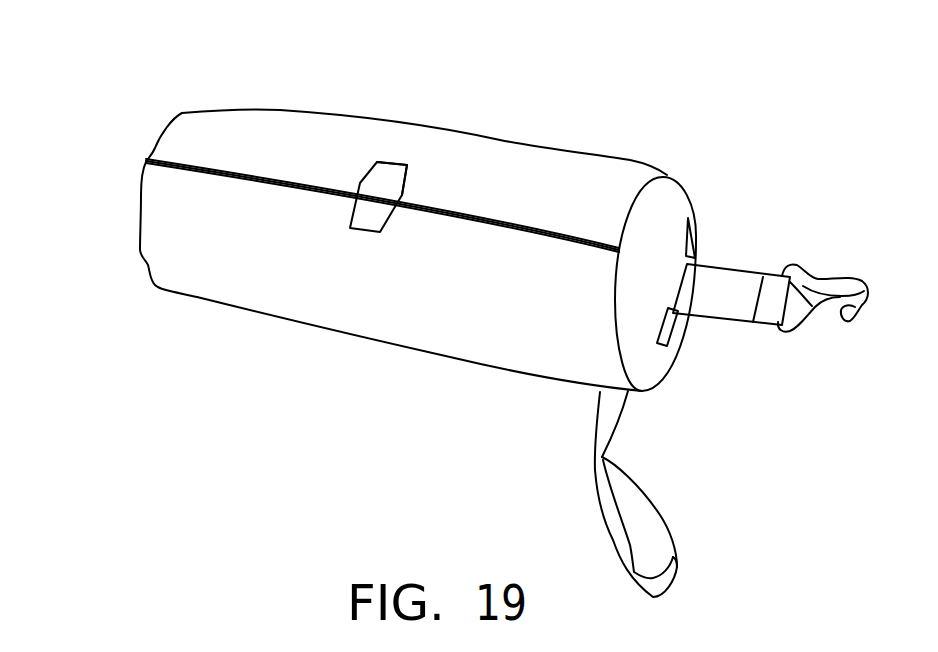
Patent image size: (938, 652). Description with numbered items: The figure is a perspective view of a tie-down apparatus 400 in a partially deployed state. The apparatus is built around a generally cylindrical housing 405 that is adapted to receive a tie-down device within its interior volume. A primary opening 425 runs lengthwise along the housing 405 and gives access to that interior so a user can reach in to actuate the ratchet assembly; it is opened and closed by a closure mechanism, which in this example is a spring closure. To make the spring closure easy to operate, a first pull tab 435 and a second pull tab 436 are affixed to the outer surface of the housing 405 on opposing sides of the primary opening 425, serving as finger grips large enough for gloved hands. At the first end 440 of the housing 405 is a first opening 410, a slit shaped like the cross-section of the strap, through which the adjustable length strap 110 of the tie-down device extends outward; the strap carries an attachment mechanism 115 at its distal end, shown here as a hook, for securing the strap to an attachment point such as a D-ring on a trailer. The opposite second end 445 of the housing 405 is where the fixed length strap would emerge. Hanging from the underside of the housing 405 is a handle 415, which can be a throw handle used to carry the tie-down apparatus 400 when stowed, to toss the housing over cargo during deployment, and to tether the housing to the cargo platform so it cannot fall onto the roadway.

The tie-down apparatus 400 is at (455, 310).
The housing 405 is at (612, 166).
The first opening 410 is at (691, 250).
The handle 415 is at (653, 517).
The primary opening 425 is at (283, 173).
The first pull tab 435 is at (370, 212).
The second pull tab 436 is at (390, 180).
The first end 440 is at (687, 373).
The second end 445 is at (133, 160).
The adjustable length strap 110 is at (707, 307).
The attachment mechanism 115 is at (837, 297).